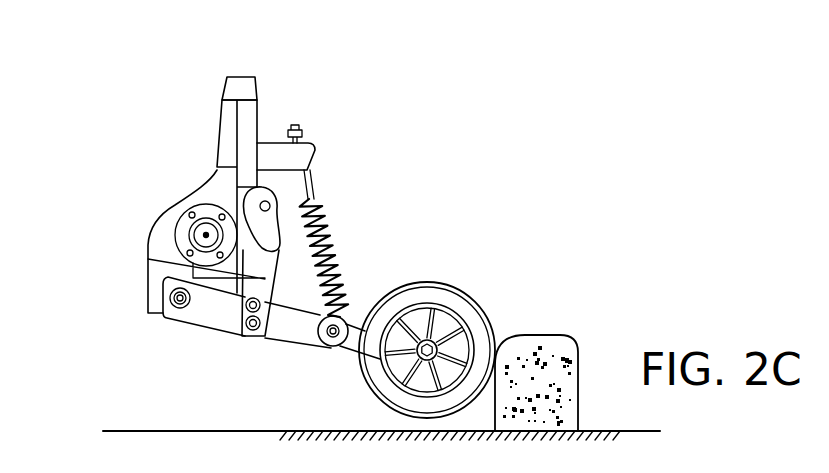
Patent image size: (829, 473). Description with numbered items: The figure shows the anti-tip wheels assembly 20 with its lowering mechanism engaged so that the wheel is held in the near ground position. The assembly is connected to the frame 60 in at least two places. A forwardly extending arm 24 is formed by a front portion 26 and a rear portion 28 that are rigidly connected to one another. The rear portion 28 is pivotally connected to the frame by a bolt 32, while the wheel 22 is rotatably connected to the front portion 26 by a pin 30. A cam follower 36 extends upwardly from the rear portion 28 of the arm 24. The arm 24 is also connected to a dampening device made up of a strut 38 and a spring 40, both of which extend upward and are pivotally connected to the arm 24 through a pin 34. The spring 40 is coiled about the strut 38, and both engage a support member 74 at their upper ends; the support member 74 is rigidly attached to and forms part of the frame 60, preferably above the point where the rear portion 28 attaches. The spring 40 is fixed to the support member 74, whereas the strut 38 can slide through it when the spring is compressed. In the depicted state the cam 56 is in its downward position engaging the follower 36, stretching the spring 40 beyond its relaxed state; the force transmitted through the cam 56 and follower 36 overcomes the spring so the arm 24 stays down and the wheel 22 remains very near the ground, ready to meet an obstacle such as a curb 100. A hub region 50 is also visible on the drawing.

The anti-tip wheels assembly 20 is at (420, 149).
The wheel 22 is at (455, 302).
The arm 24 is at (277, 338).
The front portion 26 is at (352, 342).
The rear portion 28 is at (215, 312).
The pin 30 is at (428, 350).
The bolt 32 is at (178, 310).
The pin 34 is at (333, 340).
The cam follower 36 is at (148, 258).
The strut 38 is at (293, 127).
The spring 40 is at (337, 272).
The hub flange 50 is at (178, 224).
The cam 56 is at (240, 207).
The frame 60 is at (245, 120).
The support member 74 is at (272, 155).
The curb 100 is at (565, 367).